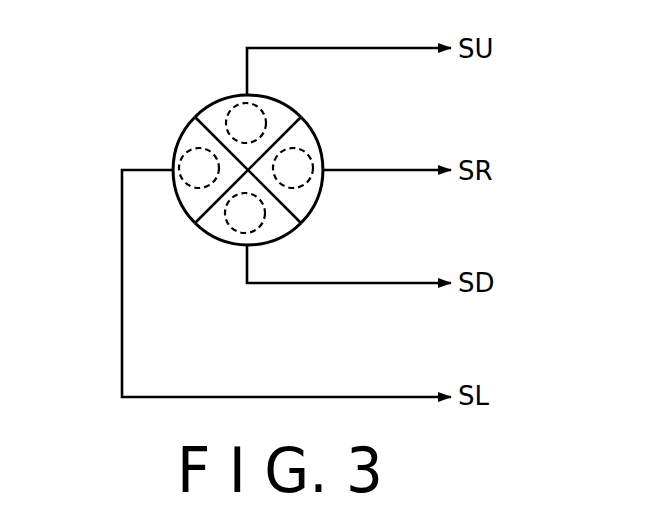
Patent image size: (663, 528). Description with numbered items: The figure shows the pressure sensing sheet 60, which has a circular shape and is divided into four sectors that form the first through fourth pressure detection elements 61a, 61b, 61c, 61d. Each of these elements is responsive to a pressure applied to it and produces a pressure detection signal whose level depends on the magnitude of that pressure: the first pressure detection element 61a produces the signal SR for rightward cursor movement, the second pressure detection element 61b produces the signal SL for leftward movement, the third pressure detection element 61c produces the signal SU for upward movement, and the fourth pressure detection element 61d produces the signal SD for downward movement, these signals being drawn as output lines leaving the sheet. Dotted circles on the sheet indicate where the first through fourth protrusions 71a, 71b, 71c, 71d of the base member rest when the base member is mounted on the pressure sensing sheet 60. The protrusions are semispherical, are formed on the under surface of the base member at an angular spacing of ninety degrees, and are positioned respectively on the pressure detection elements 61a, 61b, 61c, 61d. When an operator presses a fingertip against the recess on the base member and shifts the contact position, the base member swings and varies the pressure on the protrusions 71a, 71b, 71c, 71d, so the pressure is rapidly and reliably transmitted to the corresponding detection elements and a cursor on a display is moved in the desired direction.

The pressure sensing sheet 60 is at (160, 102).
The first pressure detection element 61a is at (317, 202).
The second pressure detection element 61b is at (173, 162).
The third pressure detection element 61c is at (217, 102).
The fourth pressure detection element 61d is at (217, 238).
The first protrusion 71a is at (312, 162).
The second protrusion 71b is at (187, 143).
The third protrusion 71c is at (262, 115).
The fourth protrusion 71d is at (257, 227).